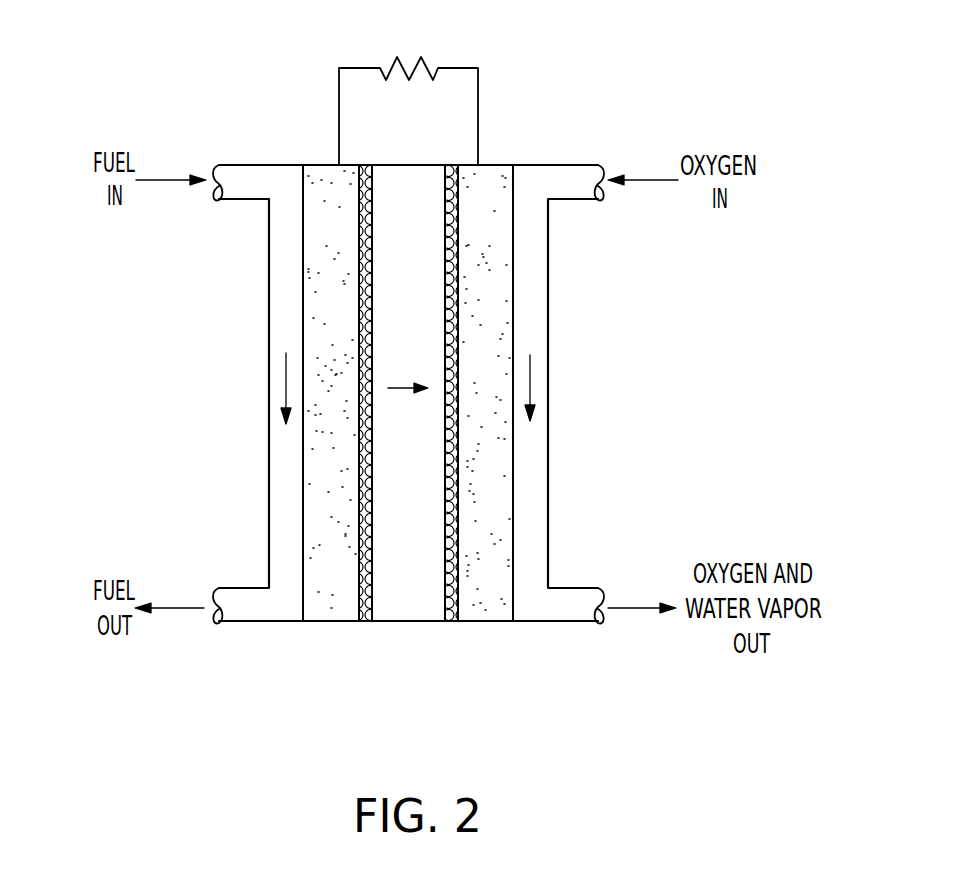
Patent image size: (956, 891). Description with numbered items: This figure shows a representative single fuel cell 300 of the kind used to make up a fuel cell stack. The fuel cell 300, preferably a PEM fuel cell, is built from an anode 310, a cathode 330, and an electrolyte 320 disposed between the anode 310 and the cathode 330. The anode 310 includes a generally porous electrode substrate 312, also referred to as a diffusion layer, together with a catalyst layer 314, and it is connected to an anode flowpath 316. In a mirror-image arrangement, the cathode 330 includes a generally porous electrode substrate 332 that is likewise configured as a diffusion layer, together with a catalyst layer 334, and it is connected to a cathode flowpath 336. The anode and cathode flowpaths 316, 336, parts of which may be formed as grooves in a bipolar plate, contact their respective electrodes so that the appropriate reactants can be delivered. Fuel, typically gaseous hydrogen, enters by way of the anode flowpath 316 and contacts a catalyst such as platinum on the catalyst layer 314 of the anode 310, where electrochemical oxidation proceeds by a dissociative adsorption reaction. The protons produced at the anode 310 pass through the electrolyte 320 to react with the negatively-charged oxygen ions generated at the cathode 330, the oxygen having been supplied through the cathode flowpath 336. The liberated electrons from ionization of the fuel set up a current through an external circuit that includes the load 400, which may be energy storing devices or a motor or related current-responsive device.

The fuel cell 300 is at (205, 87).
The anode 310 is at (357, 632).
The electrode substrate 312 is at (313, 165).
The catalyst layer 314 is at (363, 165).
The anode flowpath 316 is at (273, 270).
The electrolyte 320 is at (447, 632).
The cathode 330 is at (515, 632).
The electrode substrate 332 is at (505, 165).
The catalyst layer 334 is at (449, 165).
The cathode flowpath 336 is at (548, 270).
The load 400 is at (424, 58).